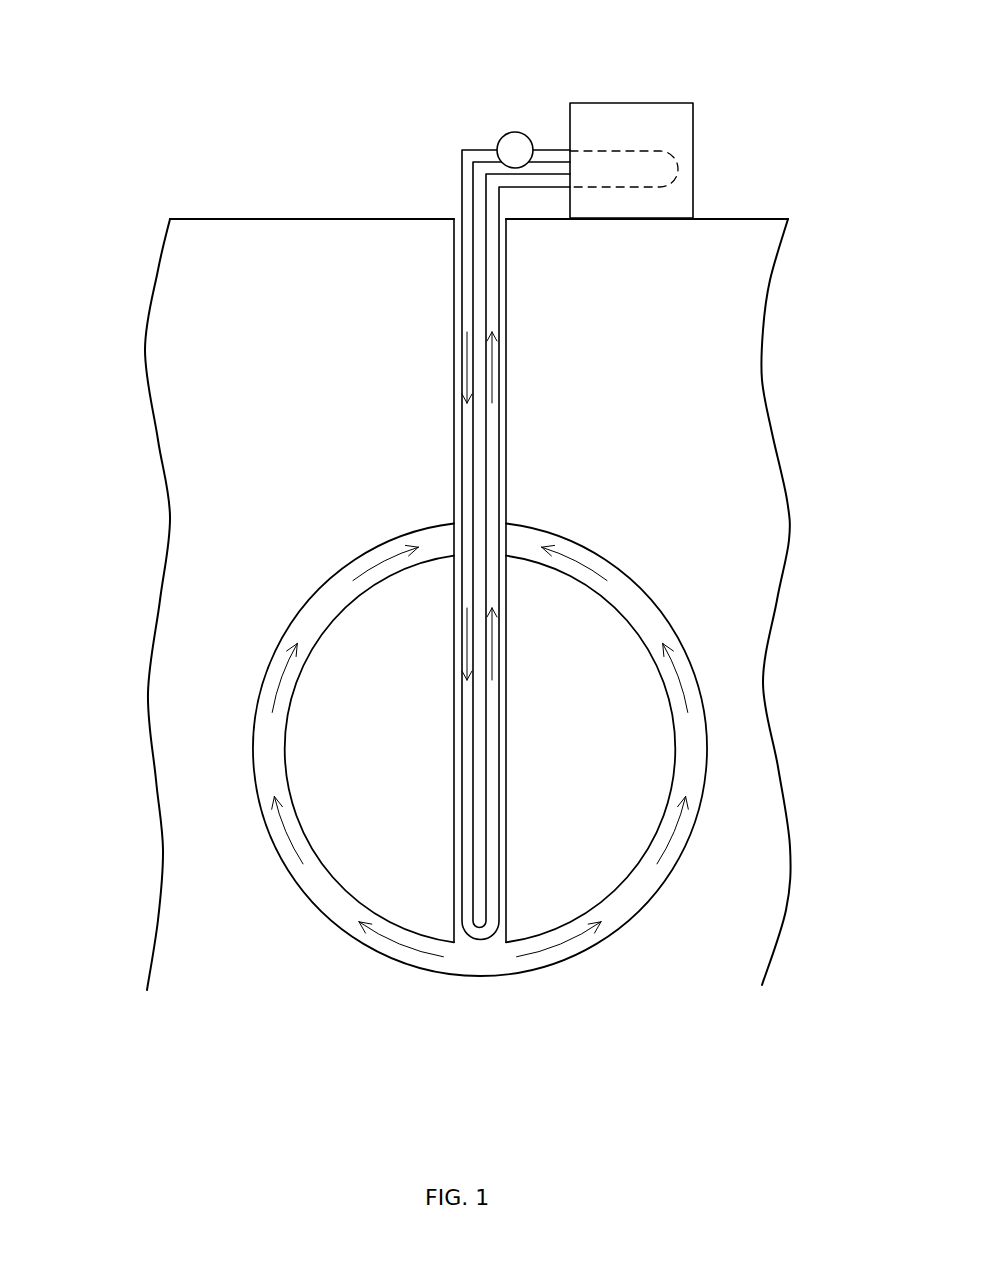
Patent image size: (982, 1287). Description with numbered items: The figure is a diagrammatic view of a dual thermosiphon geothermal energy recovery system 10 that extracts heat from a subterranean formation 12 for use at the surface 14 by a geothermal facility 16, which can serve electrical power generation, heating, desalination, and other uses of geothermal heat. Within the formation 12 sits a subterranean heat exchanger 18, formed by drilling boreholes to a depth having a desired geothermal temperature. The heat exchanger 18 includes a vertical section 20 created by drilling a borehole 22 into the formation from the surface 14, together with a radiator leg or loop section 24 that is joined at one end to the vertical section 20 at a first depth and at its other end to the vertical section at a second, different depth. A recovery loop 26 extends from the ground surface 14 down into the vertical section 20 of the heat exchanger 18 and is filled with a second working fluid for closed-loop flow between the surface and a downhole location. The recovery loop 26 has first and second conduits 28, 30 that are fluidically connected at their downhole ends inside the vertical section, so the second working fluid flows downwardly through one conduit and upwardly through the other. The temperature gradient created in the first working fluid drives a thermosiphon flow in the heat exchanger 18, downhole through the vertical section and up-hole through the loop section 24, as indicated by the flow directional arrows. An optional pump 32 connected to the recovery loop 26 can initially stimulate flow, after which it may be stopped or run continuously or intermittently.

The dual thermosiphon geothermal energy recovery system 10 is at (160, 95).
The subterranean formation 12 is at (185, 428).
The surface 14 is at (744, 218).
The geothermal facility 16 is at (664, 113).
The subterranean heat exchanger 18 is at (501, 728).
The vertical section 20 is at (481, 545).
The borehole 22 is at (450, 261).
The loop section 24 is at (323, 580).
The recovery loop 26 is at (481, 545).
The first conduit 28 is at (467, 433).
The second conduit 30 is at (492, 446).
The pump 32 is at (512, 132).